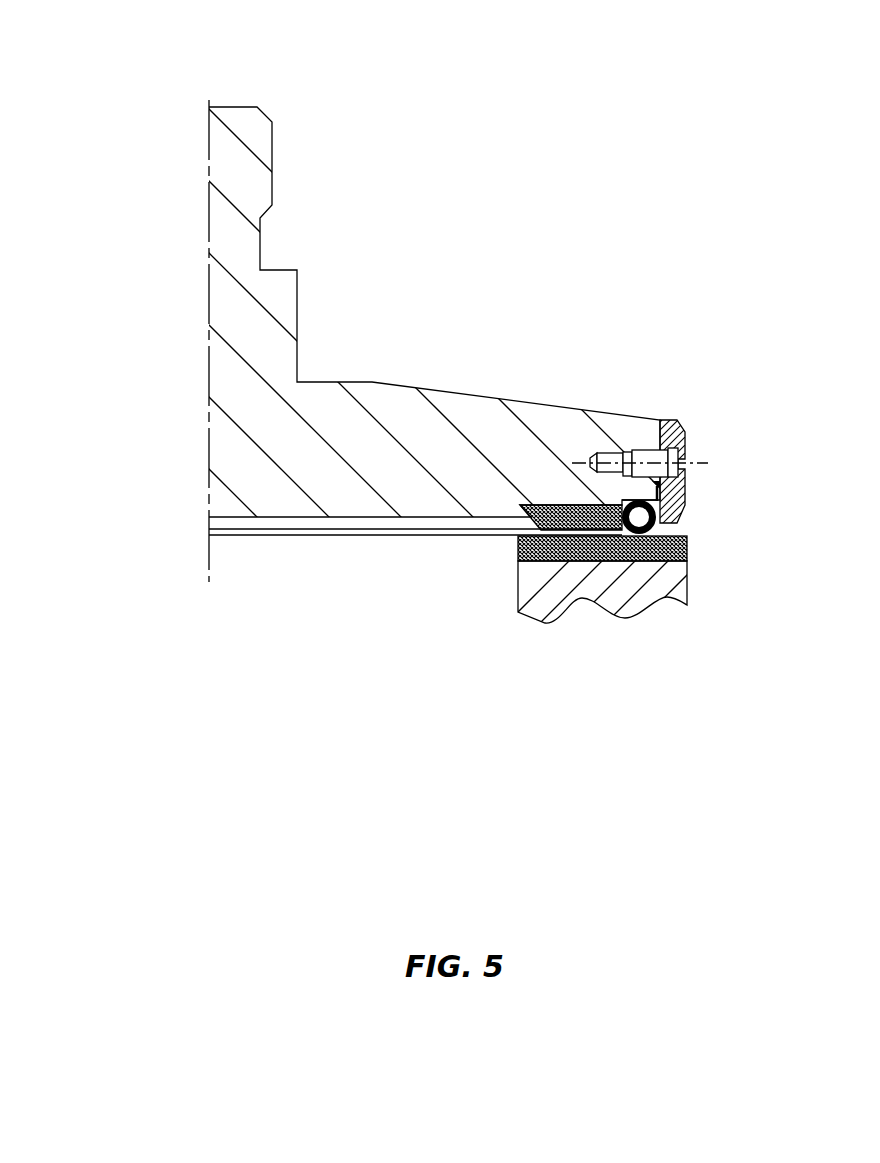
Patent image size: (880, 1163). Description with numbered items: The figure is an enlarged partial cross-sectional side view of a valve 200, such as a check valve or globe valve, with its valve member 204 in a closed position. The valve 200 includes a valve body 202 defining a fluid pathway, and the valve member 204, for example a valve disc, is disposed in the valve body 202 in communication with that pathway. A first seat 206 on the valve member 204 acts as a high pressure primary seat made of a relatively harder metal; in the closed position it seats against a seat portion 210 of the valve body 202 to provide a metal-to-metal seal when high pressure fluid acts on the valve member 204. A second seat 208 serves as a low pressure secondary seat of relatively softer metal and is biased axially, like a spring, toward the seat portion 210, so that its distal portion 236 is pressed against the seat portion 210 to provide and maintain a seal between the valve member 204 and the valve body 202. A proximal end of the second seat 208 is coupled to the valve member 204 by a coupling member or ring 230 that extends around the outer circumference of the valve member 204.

The valve 200 is at (173, 65).
The valve body 202 is at (555, 583).
The valve member 204 is at (300, 440).
The first seat 206 is at (560, 505).
The second seat 208 is at (643, 505).
The seat portion 210 is at (641, 537).
The coupling member or ring 230 is at (673, 422).
The distal portion 236 is at (662, 533).